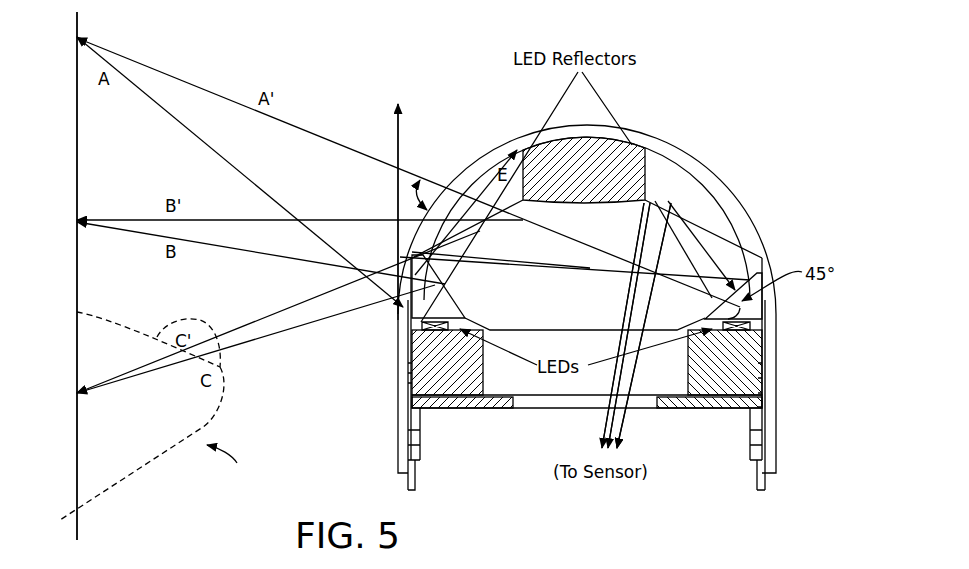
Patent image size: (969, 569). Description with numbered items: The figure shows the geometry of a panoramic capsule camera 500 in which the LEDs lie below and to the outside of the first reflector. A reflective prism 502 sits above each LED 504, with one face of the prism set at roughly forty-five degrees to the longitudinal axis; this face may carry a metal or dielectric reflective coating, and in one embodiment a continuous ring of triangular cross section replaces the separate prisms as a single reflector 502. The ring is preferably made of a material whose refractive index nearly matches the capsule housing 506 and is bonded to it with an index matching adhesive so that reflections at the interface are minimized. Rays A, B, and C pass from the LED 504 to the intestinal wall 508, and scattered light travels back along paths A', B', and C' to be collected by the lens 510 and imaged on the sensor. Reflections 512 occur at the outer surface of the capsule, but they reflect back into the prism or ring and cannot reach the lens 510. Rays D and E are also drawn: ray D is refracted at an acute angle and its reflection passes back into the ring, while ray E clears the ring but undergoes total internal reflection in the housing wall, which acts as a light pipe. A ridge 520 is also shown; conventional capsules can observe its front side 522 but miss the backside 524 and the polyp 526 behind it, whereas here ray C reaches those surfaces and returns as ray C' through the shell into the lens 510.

The optical sensor assembly 500 is at (731, 152).
The reflective prism 502 is at (458, 318).
The LED 504 is at (407, 335).
The capsule housing 506 is at (455, 179).
The intestinal wall 508 is at (80, 447).
The lens 510 is at (603, 237).
The reflections 512 is at (445, 285).
The ridge 520 is at (232, 469).
The front side 522 is at (120, 476).
The backside 524 is at (115, 320).
The polyp 526 is at (193, 320).